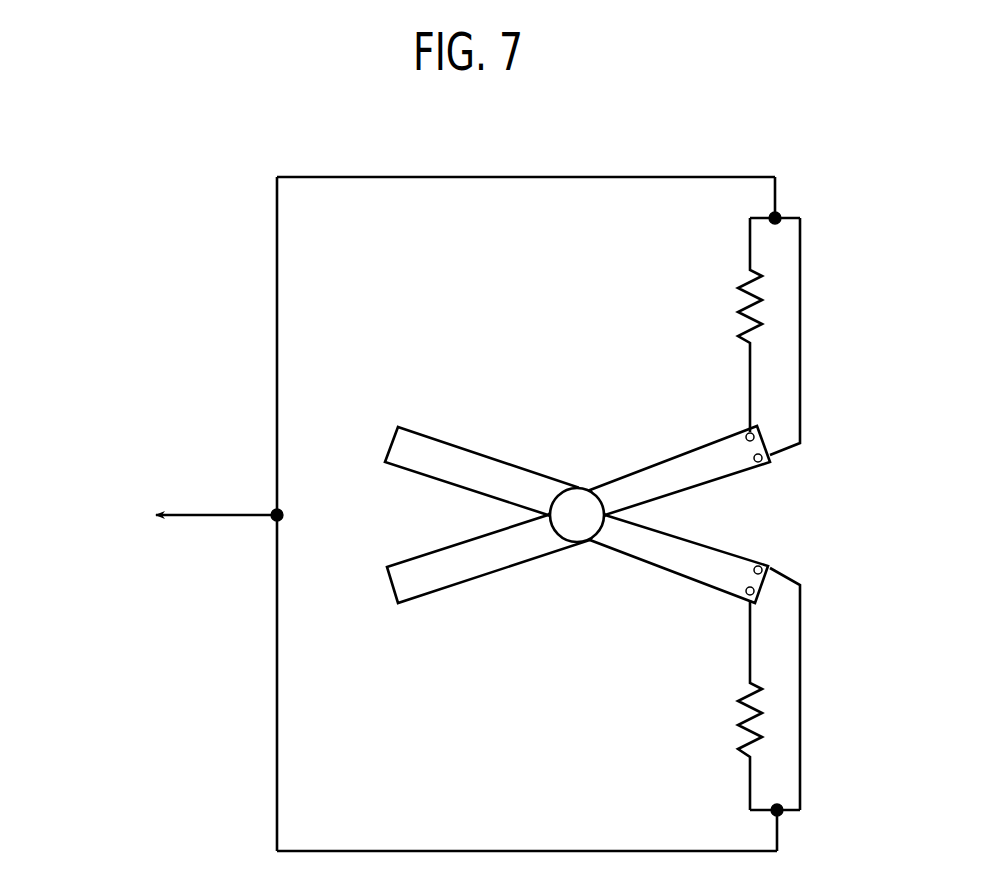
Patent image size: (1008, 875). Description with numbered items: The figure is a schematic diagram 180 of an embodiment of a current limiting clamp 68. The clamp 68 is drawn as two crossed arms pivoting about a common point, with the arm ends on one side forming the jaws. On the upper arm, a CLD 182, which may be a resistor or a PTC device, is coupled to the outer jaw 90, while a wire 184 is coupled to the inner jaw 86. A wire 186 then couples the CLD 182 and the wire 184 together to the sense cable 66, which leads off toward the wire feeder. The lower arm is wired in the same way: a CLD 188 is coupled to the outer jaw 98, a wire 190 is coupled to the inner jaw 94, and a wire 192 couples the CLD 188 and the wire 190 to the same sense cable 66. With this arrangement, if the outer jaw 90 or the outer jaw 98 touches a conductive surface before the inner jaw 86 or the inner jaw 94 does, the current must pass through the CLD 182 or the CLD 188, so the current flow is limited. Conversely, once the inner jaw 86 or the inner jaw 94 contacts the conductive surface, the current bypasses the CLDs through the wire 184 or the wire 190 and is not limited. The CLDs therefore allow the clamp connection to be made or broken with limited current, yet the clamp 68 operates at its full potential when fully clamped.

The schematic diagram 180 is at (738, 137).
The wire 186 is at (527, 177).
The wire 192 is at (527, 850).
The CLD 182 is at (715, 312).
The wire 184 is at (802, 330).
The CLD 188 is at (710, 715).
The wire 190 is at (802, 698).
The clamp 68 is at (562, 370).
The outer jaw 90 is at (742, 438).
The inner jaw 86 is at (760, 463).
The inner jaw 94 is at (760, 566).
The outer jaw 98 is at (752, 594).
The sense cable 66 is at (222, 515).